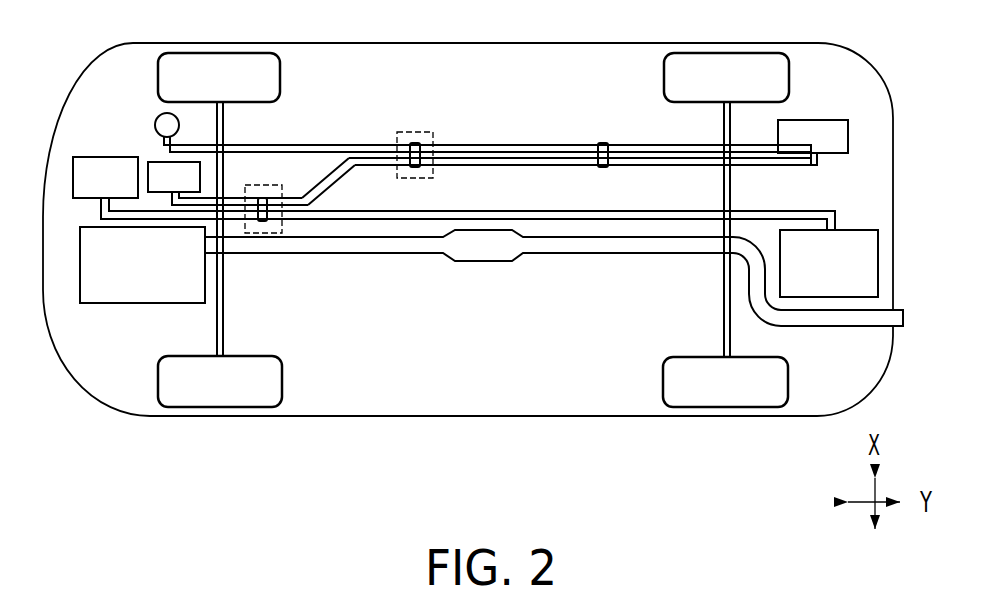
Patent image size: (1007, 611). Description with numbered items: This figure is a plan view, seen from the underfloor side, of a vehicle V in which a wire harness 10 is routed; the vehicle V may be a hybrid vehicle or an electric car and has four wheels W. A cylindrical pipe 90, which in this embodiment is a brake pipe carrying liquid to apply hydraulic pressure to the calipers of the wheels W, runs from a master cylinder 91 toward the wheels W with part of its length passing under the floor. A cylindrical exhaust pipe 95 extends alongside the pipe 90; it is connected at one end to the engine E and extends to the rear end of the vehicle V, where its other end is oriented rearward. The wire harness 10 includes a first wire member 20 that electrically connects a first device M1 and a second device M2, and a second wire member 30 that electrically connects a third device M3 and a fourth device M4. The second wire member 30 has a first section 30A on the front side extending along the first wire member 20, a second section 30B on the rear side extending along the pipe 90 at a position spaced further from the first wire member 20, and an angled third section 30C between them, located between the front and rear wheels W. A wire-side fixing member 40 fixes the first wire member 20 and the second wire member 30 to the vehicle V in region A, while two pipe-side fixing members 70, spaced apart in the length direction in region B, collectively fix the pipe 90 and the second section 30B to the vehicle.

The vehicle V is at (893, 100).
The wheels W is at (280, 78).
The engine E is at (142, 303).
The exhaust pipe 95 is at (562, 254).
The first device M1 is at (92, 157).
The second device M2 is at (853, 230).
The third device M3 is at (158, 162).
The fourth device M4 is at (812, 120).
The master cylinder 91 is at (158, 117).
The wire harness 10 is at (468, 194).
The first wire member 20 is at (588, 211).
The second wire member 30 is at (494, 203).
The first section 30A is at (229, 195).
The second section 30B is at (449, 168).
The third section 30C is at (329, 171).
The pipe 90 is at (537, 145).
The wire-side fixing member 40 is at (263, 221).
The pipe-side fixing members 70 is at (412, 143).
The region A is at (282, 231).
The region B is at (427, 131).